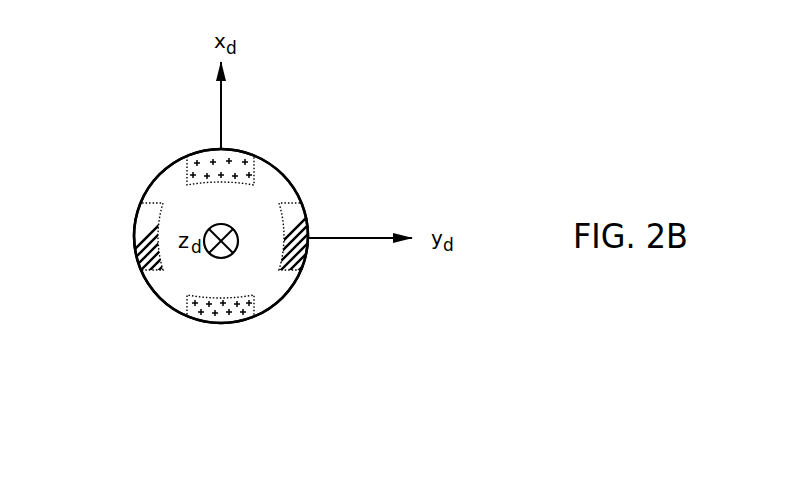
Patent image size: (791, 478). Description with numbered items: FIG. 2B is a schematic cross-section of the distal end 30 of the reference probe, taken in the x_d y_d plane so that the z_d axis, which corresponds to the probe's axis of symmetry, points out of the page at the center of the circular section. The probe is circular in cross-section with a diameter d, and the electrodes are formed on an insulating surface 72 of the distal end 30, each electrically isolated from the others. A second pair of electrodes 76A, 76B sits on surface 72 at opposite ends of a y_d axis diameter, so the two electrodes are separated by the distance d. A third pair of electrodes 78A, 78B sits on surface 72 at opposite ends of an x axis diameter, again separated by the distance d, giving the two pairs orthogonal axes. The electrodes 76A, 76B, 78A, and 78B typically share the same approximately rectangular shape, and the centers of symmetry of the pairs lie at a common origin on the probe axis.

The distal end 30 is at (162, 173).
The insulating surface 72 is at (275, 288).
The electrode 76A is at (307, 212).
The electrode 76B is at (138, 240).
The electrode 78A is at (225, 323).
The electrode 78B is at (242, 153).